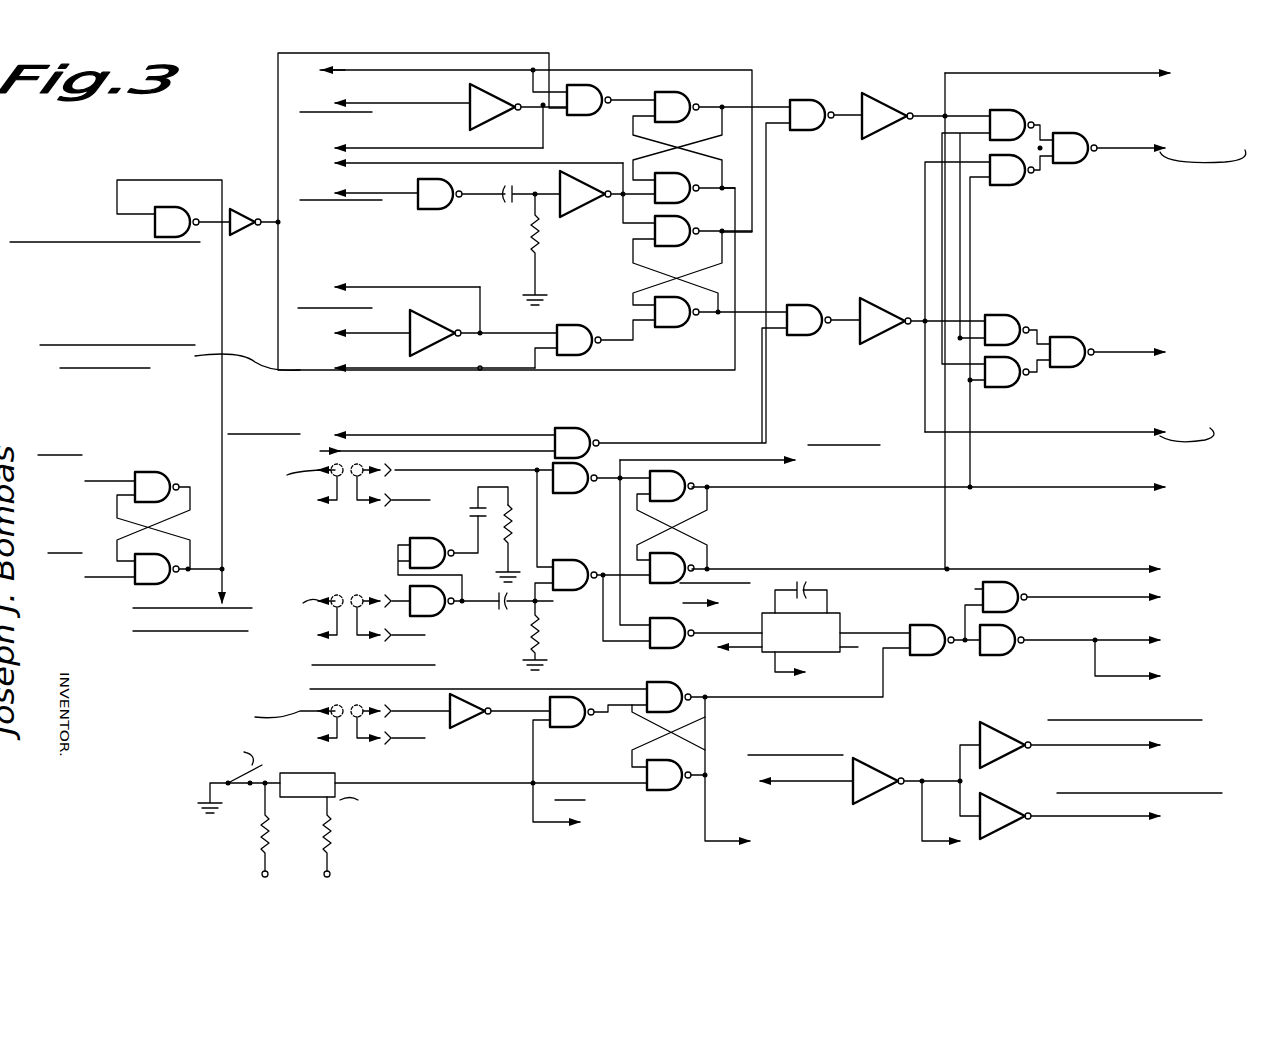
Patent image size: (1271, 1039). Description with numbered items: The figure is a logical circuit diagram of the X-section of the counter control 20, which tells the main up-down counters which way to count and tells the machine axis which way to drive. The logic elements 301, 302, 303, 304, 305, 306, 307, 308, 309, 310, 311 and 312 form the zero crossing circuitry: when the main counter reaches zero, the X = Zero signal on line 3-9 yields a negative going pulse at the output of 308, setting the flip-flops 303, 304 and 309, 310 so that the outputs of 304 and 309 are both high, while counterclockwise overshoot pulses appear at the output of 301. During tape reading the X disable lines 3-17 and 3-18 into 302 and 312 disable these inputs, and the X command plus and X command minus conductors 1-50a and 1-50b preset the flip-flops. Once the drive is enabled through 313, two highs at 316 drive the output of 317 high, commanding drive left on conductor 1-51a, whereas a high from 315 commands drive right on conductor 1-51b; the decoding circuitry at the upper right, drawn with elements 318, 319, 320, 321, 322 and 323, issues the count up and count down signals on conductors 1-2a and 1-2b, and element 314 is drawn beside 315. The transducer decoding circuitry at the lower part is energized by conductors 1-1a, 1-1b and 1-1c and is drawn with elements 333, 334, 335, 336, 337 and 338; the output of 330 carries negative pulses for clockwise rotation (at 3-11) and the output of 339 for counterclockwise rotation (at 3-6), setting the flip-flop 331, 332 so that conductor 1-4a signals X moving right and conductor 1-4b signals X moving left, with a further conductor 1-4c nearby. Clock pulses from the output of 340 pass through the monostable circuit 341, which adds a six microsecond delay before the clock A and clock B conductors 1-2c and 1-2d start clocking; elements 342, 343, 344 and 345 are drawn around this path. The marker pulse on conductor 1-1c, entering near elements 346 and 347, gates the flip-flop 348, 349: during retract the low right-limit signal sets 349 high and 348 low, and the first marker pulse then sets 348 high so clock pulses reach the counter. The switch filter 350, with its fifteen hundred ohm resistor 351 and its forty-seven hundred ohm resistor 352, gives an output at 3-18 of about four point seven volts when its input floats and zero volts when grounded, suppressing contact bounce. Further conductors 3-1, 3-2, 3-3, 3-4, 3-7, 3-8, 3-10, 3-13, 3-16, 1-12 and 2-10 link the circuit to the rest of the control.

The counter control 20 is at (140, 152).
The logic element 301 is at (498, 92).
The logic element 302 is at (595, 92).
The flip-flop logic element 303 is at (686, 95).
The flip-flop logic element 304 is at (710, 168).
The logic element 305 is at (432, 210).
The logic element 306 is at (514, 204).
The logic element 307 is at (528, 232).
The logic element 308 is at (592, 212).
The flip-flop logic element 309 is at (722, 216).
The flip-flop logic element 310 is at (680, 330).
The logic element 311 is at (466, 306).
The logic element 312 is at (575, 326).
The drive enable logic element 313 is at (575, 428).
The NAND gate 314 is at (846, 74).
The logic element 315 is at (930, 74).
The logic element 316 is at (843, 280).
The logic element 317 is at (926, 280).
The NAND gate 318 is at (1008, 110).
The NAND gate 319 is at (1010, 185).
The NAND gate 320 is at (1060, 170).
The NAND gate 321 is at (1008, 316).
The NAND gate 322 is at (1005, 388).
The NAND gate 323 is at (1070, 370).
The logic element 330 is at (572, 495).
The flip-flop logic element 331 is at (665, 502).
The flip-flop logic element 332 is at (662, 554).
The NAND gate 333 is at (432, 614).
The NAND gate 334 is at (438, 524).
The capacitor 335 is at (472, 508).
The resistor 336 is at (505, 535).
The capacitor 337 is at (530, 610).
The resistor 338 is at (528, 640).
The logic element 339 is at (602, 538).
The logic element 340 is at (652, 645).
The monostable circuit 341 is at (830, 613).
The capacitor 342 is at (808, 588).
The NAND gate 343 is at (930, 625).
The NAND gate 344 is at (985, 590).
The NAND gate 345 is at (985, 660).
The inverter 346 is at (475, 724).
The NAND gate 347 is at (560, 727).
The flip-flop logic element 348 is at (658, 683).
The flip-flop logic element 349 is at (655, 780).
The switch filter 350 is at (305, 773).
The 1,500 ohm resistor 351 is at (258, 832).
The 4,700 ohm resistor 352 is at (340, 830).
The X notch enable terminal 3-1 is at (155, 230).
The G69 input terminal 3-2 is at (140, 460).
The Rp input terminal 3-3 is at (125, 578).
The retract disable terminal 3-4 is at (220, 573).
The counterclockwise pulse point 3-6 is at (385, 103).
The X moving left p terminal 3-7 is at (545, 120).
The X power clear terminal 3-8 is at (355, 168).
The X = Zero line 3-9 is at (355, 192).
The X moving right p terminal 3-10 is at (482, 295).
The clockwise pulse point 3-11 is at (340, 337).
The X dial terminal 3-13 is at (450, 452).
The X clock inhibit terminal 3-16 is at (705, 820).
The X disable line 3-17 is at (305, 53).
The X disable line 3-18 is at (232, 380).
The X command plus conductor 1-50a is at (398, 70).
The X command minus conductor 1-50b is at (325, 375).
The X drive left conductor 1-51a is at (1090, 432).
The X drive right conductor 1-51b is at (1010, 40).
The count up conductor 1-2a is at (1155, 122).
The count down conductor 1-2b is at (1115, 352).
The clock A conductor 1-2c is at (1130, 600).
The clock B conductor 1-2d is at (1135, 643).
The X moving right conductor 1-4a is at (1125, 492).
The X moving left conductor 1-4b is at (978, 569).
The X clock A terminal 1-4c is at (1115, 678).
The transducer conductor 1-1a is at (380, 470).
The transducer conductor 1-1b is at (395, 593).
The marker pulse conductor 1-1c is at (380, 728).
The notch enable terminal 1-12 is at (515, 412).
The power clear terminal 2-10 is at (500, 680).